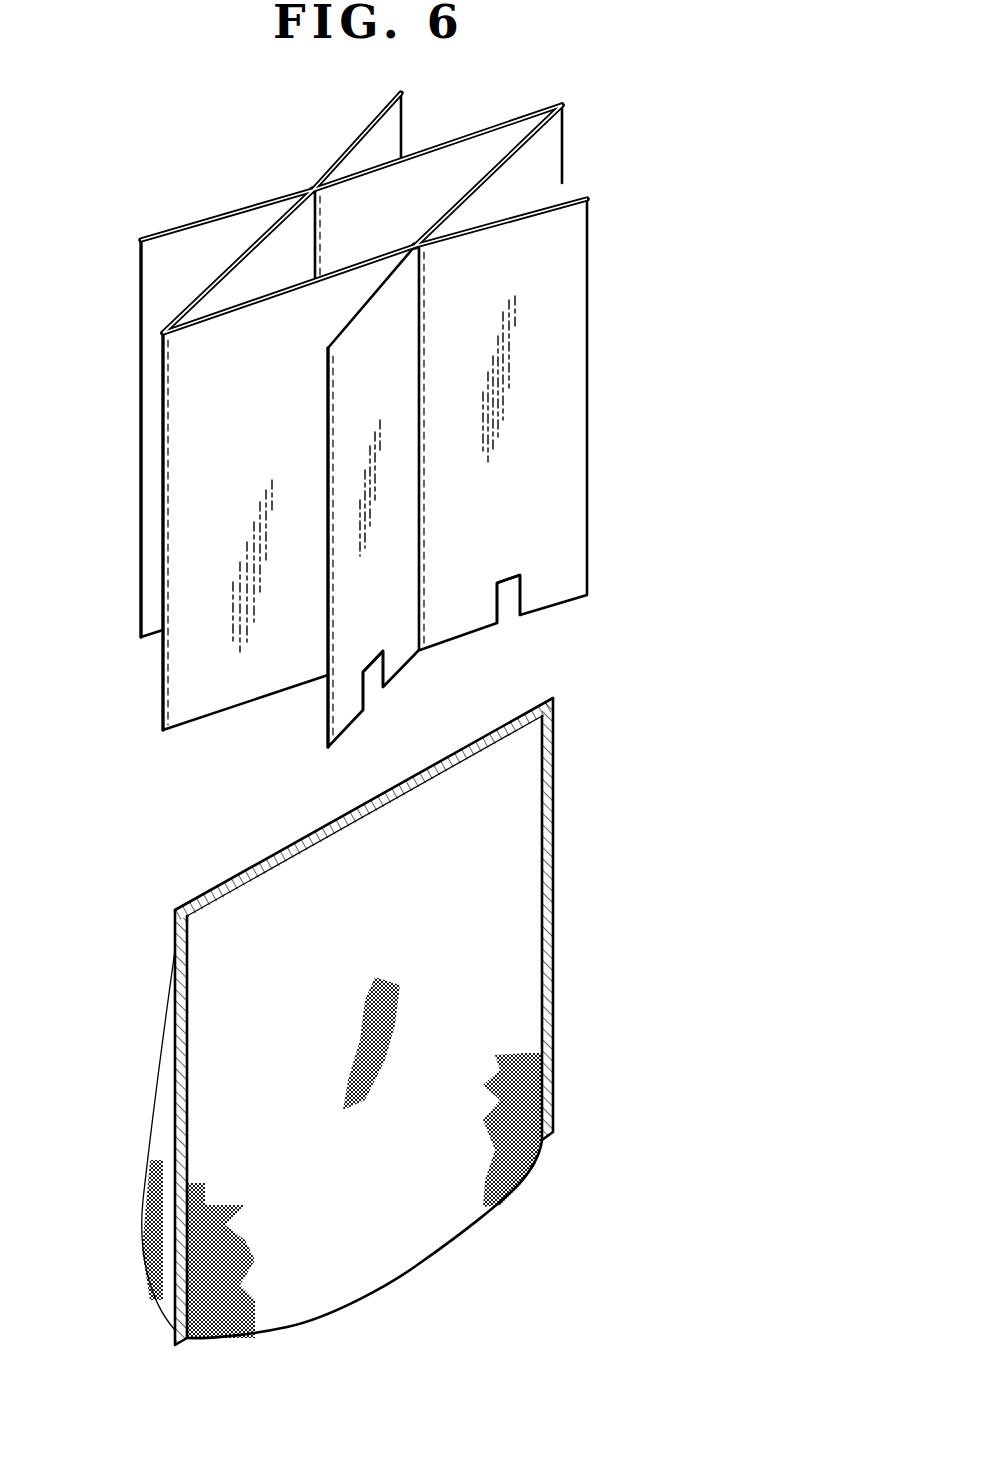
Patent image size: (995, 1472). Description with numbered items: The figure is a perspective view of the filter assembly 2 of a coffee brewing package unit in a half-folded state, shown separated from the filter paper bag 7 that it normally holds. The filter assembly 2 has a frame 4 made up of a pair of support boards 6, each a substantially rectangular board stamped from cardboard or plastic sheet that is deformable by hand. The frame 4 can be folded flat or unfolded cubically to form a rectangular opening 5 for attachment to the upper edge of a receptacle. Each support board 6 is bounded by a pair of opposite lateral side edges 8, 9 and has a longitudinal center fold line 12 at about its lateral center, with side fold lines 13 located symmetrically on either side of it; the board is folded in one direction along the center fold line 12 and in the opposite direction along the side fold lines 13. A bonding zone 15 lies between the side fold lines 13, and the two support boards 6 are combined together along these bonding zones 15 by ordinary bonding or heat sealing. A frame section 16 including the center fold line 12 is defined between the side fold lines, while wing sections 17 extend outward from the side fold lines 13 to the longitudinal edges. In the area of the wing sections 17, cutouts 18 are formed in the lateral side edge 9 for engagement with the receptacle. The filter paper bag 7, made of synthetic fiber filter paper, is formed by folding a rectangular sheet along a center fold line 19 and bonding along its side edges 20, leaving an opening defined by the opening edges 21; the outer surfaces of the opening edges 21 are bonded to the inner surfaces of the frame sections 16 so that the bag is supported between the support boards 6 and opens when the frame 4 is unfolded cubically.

The filter assembly 2 is at (137, 222).
The frame 4 is at (602, 242).
The rectangular opening 5 is at (437, 183).
The support board 6 is at (488, 125).
The filter paper bag 7 is at (570, 830).
The lateral side edge 8 is at (205, 292).
The lateral side edge 9 is at (200, 720).
The center fold line 12 is at (562, 183).
The side fold line 13 is at (420, 460).
The bonding zone 15 is at (313, 185).
The frame section 16 is at (542, 152).
The wing section 17 is at (213, 247).
The cutout 18 is at (508, 595).
The center fold line 19 is at (430, 1252).
The side edge 20 is at (553, 953).
The opening edge 21 is at (312, 835).